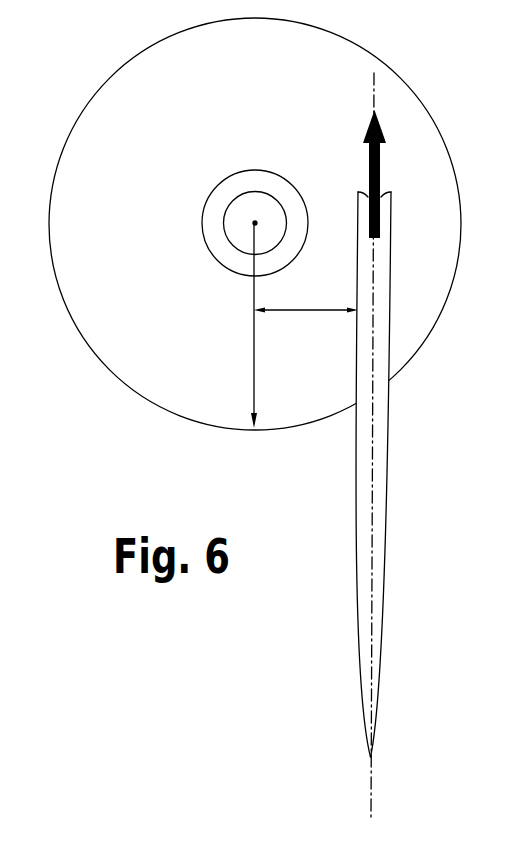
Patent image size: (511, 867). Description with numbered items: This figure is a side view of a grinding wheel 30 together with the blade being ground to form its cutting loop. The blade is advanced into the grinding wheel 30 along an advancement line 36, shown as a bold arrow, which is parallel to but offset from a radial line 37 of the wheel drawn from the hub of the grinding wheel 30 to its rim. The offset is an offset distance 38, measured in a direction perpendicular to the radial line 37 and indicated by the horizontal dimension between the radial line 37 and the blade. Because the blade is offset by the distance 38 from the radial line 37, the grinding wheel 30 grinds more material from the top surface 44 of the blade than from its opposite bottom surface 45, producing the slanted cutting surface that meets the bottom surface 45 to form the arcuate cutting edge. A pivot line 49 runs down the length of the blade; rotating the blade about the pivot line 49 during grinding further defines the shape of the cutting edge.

The grinding wheel 30 is at (58, 96).
The advancement line 36 is at (369, 179).
The radial line 37 is at (253, 326).
The offset distance 38 is at (317, 312).
The top surface 44 is at (357, 522).
The bottom surface 45 is at (388, 522).
The pivot line 49 is at (370, 793).